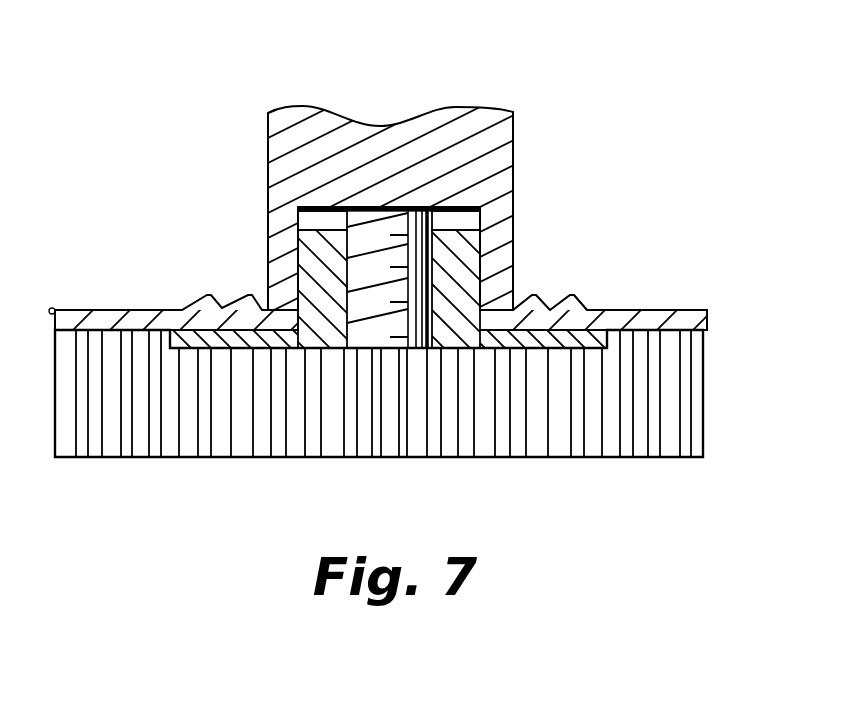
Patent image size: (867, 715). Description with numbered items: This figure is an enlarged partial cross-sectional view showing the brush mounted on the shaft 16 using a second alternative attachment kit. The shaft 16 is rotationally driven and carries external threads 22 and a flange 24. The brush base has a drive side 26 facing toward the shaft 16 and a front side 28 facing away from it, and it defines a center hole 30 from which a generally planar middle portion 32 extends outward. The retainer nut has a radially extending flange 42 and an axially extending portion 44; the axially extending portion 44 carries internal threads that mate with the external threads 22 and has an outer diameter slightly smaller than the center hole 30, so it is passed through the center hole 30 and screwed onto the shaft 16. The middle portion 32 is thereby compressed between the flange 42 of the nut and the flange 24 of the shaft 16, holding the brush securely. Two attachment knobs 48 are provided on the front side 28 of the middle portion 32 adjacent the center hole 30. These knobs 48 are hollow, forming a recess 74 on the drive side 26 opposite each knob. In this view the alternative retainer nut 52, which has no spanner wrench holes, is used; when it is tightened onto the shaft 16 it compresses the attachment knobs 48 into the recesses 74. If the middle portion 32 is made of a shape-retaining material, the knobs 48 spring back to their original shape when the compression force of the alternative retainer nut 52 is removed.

The shaft 16 is at (395, 258).
The external threads 22 is at (374, 235).
The flange 24 is at (503, 163).
The drive side 26 is at (55, 308).
The front side 28 is at (665, 333).
The center hole 30 is at (300, 316).
The middle portion 32 is at (140, 312).
The radially extending flange 42 is at (242, 340).
The axially extending portion 44 is at (297, 213).
The attachment knobs 48 is at (578, 322).
The alternative retainer nut 52 is at (480, 262).
The recess 74 is at (553, 310).